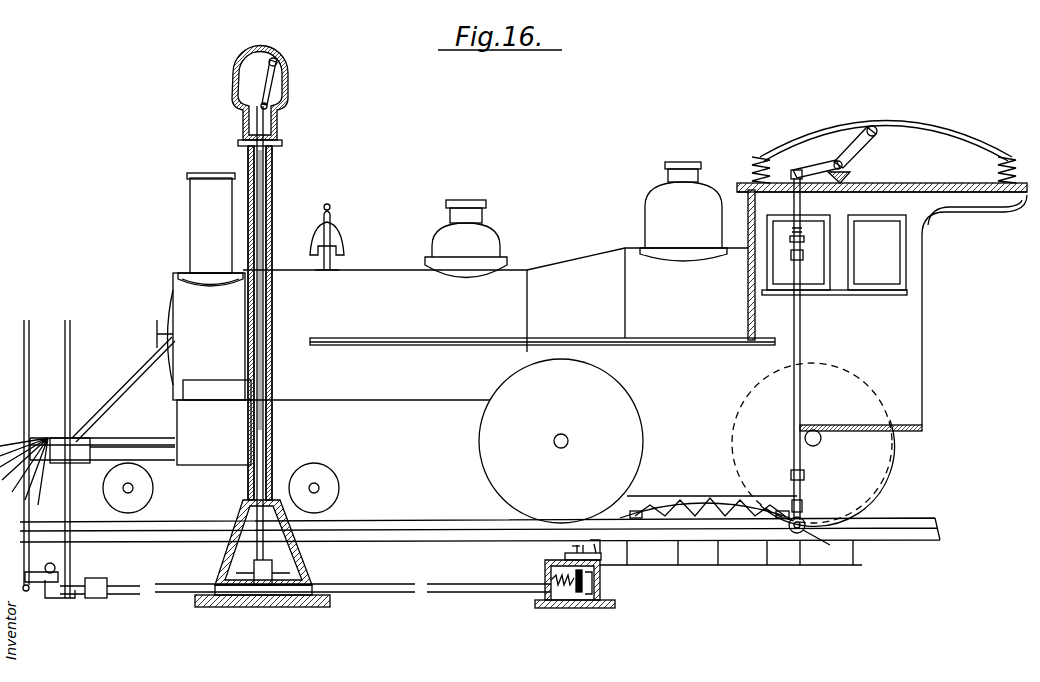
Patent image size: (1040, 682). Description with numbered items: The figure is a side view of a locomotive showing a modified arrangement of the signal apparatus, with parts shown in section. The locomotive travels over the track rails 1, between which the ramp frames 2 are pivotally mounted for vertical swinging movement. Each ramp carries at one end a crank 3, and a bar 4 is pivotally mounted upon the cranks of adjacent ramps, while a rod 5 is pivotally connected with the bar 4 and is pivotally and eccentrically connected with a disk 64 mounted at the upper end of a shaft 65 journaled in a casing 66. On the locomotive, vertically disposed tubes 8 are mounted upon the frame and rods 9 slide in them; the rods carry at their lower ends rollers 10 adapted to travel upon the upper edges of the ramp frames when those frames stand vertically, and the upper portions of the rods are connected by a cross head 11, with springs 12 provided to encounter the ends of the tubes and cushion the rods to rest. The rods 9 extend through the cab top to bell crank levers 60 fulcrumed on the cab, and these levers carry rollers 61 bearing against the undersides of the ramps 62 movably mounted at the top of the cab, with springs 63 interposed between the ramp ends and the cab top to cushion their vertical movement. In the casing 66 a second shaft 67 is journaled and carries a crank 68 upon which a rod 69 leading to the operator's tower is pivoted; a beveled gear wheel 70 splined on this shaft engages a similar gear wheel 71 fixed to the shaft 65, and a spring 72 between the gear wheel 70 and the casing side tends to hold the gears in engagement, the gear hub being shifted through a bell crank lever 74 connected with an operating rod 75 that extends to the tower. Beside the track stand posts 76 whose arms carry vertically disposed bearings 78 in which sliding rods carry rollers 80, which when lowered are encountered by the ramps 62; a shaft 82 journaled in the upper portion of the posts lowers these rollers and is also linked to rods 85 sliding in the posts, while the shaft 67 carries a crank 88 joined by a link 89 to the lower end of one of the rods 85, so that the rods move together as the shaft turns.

The track rails 1 is at (888, 520).
The ramp frames 2 is at (693, 517).
The crank 3 is at (597, 543).
The bar 4 is at (576, 547).
The rod 5 is at (572, 551).
The tubes 8 is at (801, 328).
The rods 9 is at (803, 498).
The rollers 10 is at (820, 539).
The cross head 11 is at (802, 226).
The springs 12 is at (823, 241).
The bell crank levers 60 is at (821, 160).
The rollers 61 is at (874, 137).
The ramps 62 is at (906, 124).
The springs 63 is at (1000, 168).
The disk 64 is at (565, 556).
The shaft 65 is at (601, 591).
The casing 66 is at (554, 602).
The shaft 67 is at (453, 594).
The crank 68 is at (81, 600).
The rod 69 is at (70, 370).
The beveled gear wheel 70 is at (580, 596).
The gear wheel 71 is at (606, 577).
The spring 72 is at (546, 604).
The bell crank lever 74 is at (52, 600).
The operating rod 75 is at (29, 398).
The posts 76 is at (273, 314).
The bearings 78 is at (381, 594).
The rollers 80 is at (284, 118).
The shaft 82 is at (258, 75).
The rods 85 is at (274, 446).
The crank 88 is at (287, 569).
The link 89 is at (262, 542).